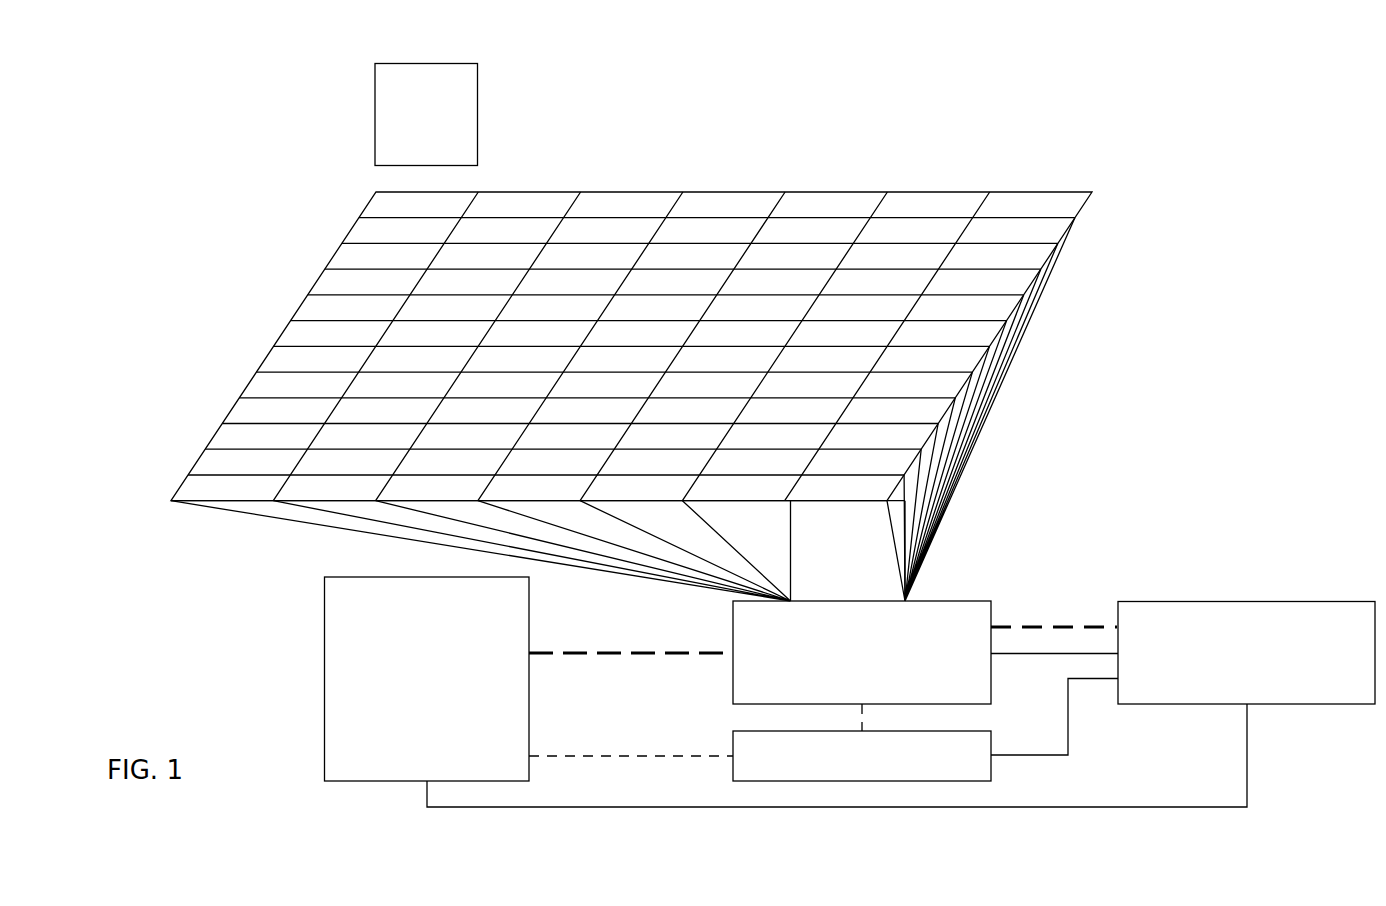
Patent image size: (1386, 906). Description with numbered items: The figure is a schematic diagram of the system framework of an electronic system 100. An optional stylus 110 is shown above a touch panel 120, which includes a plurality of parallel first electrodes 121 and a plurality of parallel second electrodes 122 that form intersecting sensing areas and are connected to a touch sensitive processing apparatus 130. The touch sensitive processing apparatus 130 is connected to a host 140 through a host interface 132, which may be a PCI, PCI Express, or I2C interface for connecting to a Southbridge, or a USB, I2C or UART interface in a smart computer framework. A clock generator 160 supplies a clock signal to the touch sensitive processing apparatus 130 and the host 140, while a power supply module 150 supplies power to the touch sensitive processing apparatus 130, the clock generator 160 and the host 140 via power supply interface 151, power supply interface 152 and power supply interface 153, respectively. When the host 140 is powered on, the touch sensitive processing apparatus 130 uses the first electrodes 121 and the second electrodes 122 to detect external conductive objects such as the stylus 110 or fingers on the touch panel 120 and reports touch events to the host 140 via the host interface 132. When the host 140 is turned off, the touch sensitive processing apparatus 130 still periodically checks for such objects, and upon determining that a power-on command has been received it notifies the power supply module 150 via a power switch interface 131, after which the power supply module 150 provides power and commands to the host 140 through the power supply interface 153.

The electronic system 100 is at (280, 103).
The stylus 110 is at (426, 115).
The touch panel 120 is at (708, 192).
The first electrodes 121 is at (887, 192).
The second electrodes 122 is at (1042, 218).
The touch sensitive processing apparatus 130 is at (623, 461).
The power switch interface 131 is at (1016, 627).
The host interface 132 is at (683, 650).
The host 140 is at (427, 679).
The power supply module 150 is at (1246, 653).
The power supply interface 151 is at (1042, 653).
The power supply interface 152 is at (1093, 678).
The power supply interface 153 is at (1093, 807).
The clock generator 160 is at (760, 742).